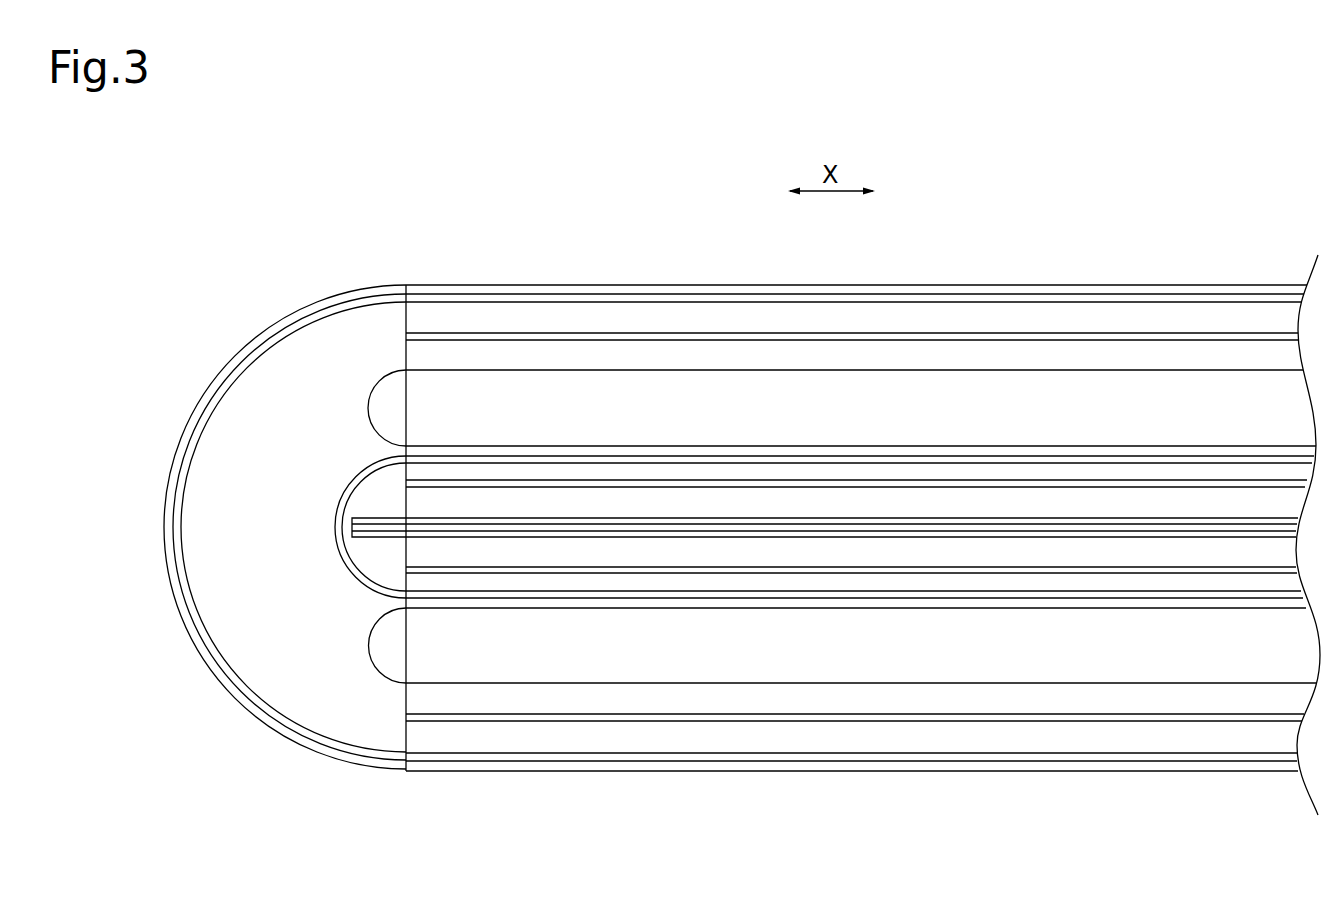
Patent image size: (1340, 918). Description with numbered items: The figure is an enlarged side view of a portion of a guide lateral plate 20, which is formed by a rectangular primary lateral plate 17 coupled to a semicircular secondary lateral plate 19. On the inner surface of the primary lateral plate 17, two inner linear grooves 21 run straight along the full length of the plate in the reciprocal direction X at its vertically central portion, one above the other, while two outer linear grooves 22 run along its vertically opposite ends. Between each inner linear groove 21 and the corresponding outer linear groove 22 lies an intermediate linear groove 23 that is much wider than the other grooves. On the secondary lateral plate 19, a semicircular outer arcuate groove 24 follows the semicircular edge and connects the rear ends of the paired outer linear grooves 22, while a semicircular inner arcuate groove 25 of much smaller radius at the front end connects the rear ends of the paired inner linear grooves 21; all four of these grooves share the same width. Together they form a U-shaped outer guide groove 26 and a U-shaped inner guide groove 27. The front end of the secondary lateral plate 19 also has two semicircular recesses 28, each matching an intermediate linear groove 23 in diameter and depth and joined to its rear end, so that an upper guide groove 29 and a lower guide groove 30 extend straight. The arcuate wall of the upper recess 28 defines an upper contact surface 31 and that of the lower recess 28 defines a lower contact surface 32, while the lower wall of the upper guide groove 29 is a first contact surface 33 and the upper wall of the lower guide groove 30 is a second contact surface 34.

The primary lateral plate 17 is at (862, 285).
The secondary lateral plate 19 is at (312, 300).
The guide lateral plate 20 is at (1160, 214).
The inner linear groove 21 is at (724, 456).
The outer linear groove 22 is at (518, 300).
The intermediate linear groove 23 is at (970, 370).
The outer arcuate groove 24 is at (252, 365).
The inner arcuate groove 25 is at (354, 484).
The outer guide groove 26 is at (451, 290).
The inner guide groove 27 is at (499, 450).
The recess 28 is at (383, 398).
The upper guide groove 29 is at (1056, 366).
The lower guide groove 30 is at (1098, 688).
The upper contact surface 31 is at (380, 432).
The lower contact surface 32 is at (380, 666).
The first contact surface 33 is at (1088, 446).
The second contact surface 34 is at (1108, 608).